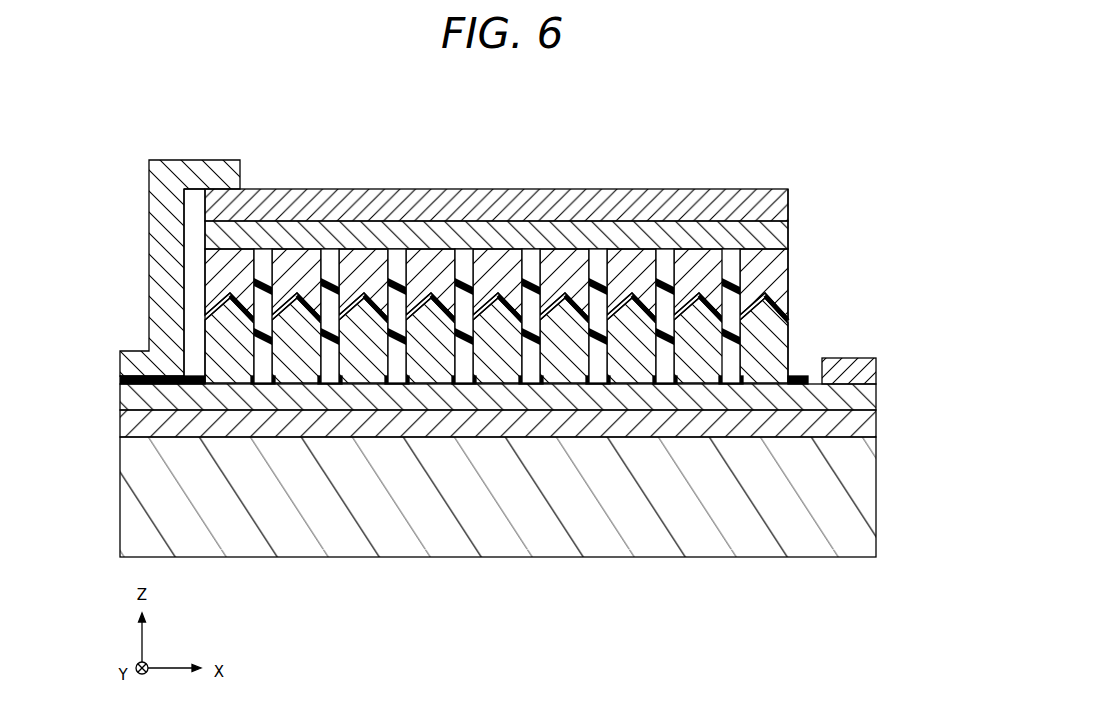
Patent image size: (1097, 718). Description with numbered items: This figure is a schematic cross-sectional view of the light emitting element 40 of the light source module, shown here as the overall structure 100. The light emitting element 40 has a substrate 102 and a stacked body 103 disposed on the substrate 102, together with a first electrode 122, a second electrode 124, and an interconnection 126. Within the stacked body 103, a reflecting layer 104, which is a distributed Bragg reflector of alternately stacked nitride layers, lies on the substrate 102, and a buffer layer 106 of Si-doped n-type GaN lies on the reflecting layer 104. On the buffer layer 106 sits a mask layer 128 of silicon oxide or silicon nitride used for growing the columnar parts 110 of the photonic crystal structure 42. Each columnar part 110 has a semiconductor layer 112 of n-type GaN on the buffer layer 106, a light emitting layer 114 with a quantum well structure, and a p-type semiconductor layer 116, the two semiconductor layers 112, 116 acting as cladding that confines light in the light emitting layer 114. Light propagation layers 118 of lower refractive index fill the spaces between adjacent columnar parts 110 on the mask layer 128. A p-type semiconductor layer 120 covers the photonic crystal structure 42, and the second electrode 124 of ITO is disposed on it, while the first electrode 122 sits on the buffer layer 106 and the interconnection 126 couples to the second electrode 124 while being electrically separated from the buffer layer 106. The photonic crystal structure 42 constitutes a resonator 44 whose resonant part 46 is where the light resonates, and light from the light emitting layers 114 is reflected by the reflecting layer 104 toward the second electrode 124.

The light emitting device 100 is at (824, 100).
The light emitting element 40 is at (783, 156).
The photonic crystal structure 42 is at (800, 242).
The resonator 44 is at (188, 271).
The resonant part 46 is at (188, 301).
The substrate 102 is at (302, 528).
The stacked body 103 is at (809, 199).
The reflecting layer 104 is at (367, 427).
The buffer layer 106 is at (423, 400).
The columnar part 110 is at (550, 266).
The semiconductor layer 112 is at (763, 347).
The light emitting layer 114 is at (763, 313).
The semiconductor layer 116 is at (757, 290).
The light propagation layer 118 is at (662, 270).
The semiconductor layer 120 is at (487, 238).
The first electrode 122 is at (848, 385).
The second electrode 124 is at (370, 210).
The interconnection 126 is at (182, 173).
The mask layer 128 is at (533, 385).